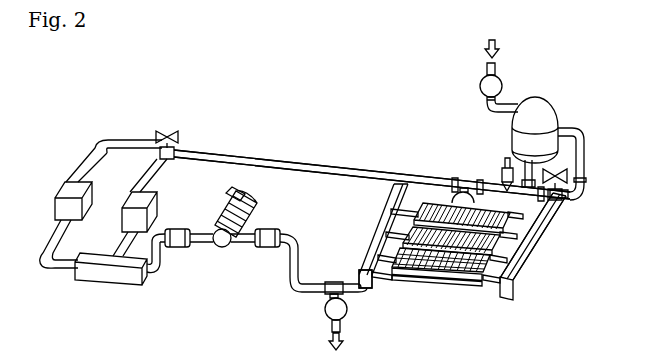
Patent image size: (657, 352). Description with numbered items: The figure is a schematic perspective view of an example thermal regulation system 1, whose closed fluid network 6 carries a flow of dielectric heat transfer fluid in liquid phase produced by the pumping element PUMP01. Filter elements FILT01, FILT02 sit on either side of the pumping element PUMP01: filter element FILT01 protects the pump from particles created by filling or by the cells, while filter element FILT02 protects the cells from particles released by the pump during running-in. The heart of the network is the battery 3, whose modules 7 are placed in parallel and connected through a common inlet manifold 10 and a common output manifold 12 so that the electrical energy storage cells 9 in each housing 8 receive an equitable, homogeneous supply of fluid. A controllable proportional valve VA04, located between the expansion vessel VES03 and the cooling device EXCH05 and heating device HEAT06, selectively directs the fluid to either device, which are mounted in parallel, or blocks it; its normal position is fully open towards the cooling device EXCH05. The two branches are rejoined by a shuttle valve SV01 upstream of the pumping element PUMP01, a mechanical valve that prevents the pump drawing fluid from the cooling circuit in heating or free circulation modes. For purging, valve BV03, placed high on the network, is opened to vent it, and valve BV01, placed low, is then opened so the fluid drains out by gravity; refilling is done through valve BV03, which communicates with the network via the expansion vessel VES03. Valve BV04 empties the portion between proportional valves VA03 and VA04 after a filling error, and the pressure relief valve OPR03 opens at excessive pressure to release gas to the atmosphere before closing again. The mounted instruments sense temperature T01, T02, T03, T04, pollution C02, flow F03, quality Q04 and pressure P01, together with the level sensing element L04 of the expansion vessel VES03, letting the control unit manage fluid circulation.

The thermal regulation system 1 is at (318, 121).
The battery 3 is at (509, 303).
The fluid network 6 is at (262, 150).
The module 7 is at (417, 309).
The housing 8 is at (403, 280).
The electrical energy storage cell 9 is at (438, 276).
The common inlet manifold 10 is at (388, 207).
The common output manifold 12 is at (521, 263).
The cooling device EXCH05 is at (70, 182).
The heating device HEAT06 is at (128, 192).
The controllable proportional valve VA04 is at (184, 147).
The temperature sensing element T04 is at (222, 156).
The controllable valve BV03 is at (479, 86).
The expansion vessel VES03 is at (537, 104).
The level sensing element L04 is at (540, 132).
The quality sensing element Q04 is at (525, 182).
The pressure relief valve OPR03 is at (503, 172).
The controllable valve BV04 is at (453, 194).
The controllable proportional valve VA03 is at (584, 182).
The temperature sensing element T03 is at (553, 208).
The flow sensing element F03 is at (546, 222).
The filter element FILT01 is at (175, 229).
The filter element FILT02 is at (273, 229).
The pumping element PUMP01 is at (220, 247).
The pressure sensing element P01 is at (289, 265).
The temperature sensing element T01 is at (367, 250).
The controllable valve BV01 is at (325, 308).
The shuttle valve SV01 is at (130, 276).
The pollution sensing element C02 is at (458, 277).
The temperature sensing element T02 is at (480, 274).